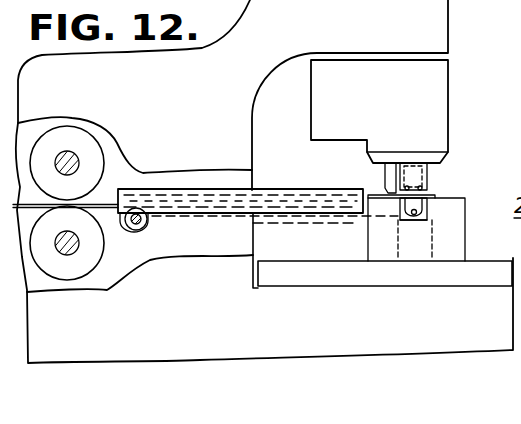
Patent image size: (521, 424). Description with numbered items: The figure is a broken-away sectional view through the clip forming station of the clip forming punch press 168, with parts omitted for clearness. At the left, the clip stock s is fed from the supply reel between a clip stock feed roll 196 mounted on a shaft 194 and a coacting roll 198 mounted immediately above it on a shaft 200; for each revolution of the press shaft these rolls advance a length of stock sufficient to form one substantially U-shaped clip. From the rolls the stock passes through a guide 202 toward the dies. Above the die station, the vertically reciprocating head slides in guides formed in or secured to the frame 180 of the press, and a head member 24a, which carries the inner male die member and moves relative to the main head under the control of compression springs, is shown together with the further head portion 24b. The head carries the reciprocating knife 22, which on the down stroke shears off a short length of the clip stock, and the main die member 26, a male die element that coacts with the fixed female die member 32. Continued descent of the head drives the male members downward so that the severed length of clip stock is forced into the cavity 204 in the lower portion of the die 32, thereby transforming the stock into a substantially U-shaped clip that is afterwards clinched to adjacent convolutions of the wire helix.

The clip forming punch press 168 is at (201, 363).
The frame of the press 180 is at (437, 33).
The head member 24a is at (392, 102).
The punch head block (second) 24b is at (520, 101).
The reciprocating knife 22 is at (386, 180).
The main die member 26 is at (426, 176).
The fixed female die member 32 is at (427, 206).
The cavity 204 is at (422, 214).
The guide 202 is at (272, 193).
The clip stock S is at (103, 201).
The coacting roll 198 is at (78, 138).
The shaft 200 is at (76, 163).
The clip stock feed roll 196 is at (68, 276).
The shaft 194 is at (78, 252).